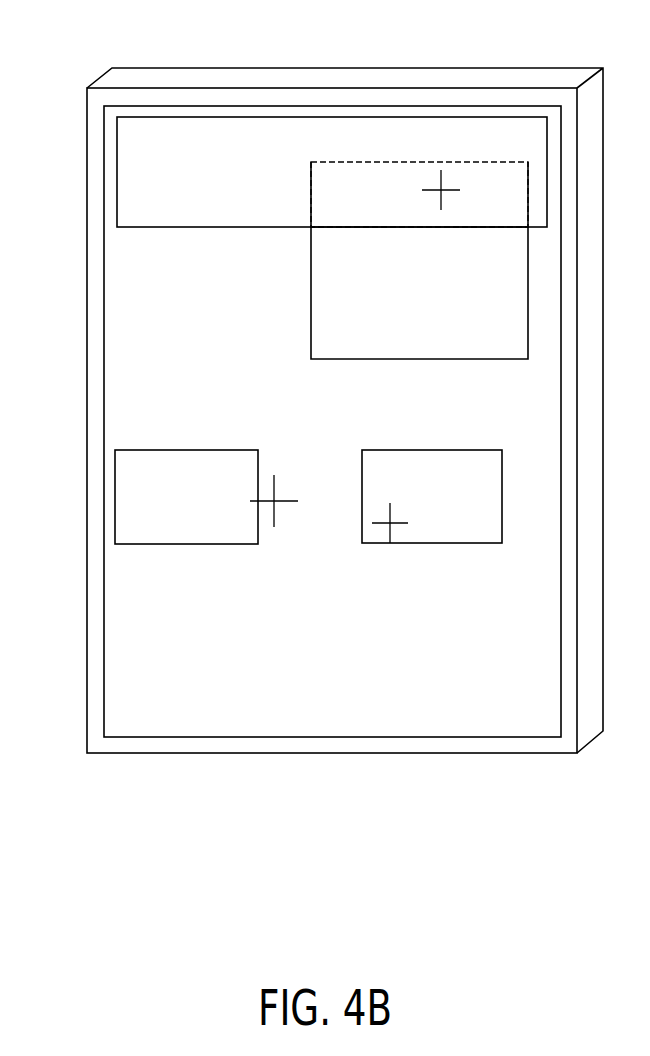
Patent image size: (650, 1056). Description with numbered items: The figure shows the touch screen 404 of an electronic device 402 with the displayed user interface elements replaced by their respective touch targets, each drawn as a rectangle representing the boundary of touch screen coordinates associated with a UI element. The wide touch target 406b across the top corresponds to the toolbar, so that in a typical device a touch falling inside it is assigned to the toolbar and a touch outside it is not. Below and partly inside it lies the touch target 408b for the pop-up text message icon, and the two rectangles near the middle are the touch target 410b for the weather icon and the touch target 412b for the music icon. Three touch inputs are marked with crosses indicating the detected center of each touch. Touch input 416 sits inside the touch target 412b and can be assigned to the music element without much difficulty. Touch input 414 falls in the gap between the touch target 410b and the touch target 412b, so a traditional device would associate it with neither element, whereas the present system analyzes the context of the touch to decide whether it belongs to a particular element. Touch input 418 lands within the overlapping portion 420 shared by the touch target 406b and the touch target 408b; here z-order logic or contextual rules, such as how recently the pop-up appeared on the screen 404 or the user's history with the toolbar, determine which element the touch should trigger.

The electronic device 402 is at (515, 80).
The touch screen 404 is at (217, 737).
The touch target 406b is at (128, 204).
The touch target 408b is at (310, 332).
The touch target 410b is at (118, 507).
The touch target 412b is at (481, 449).
The touch input 414 is at (285, 499).
The touch input 416 is at (390, 521).
The touch input 418 is at (453, 188).
The overlapping portion 420 is at (309, 178).